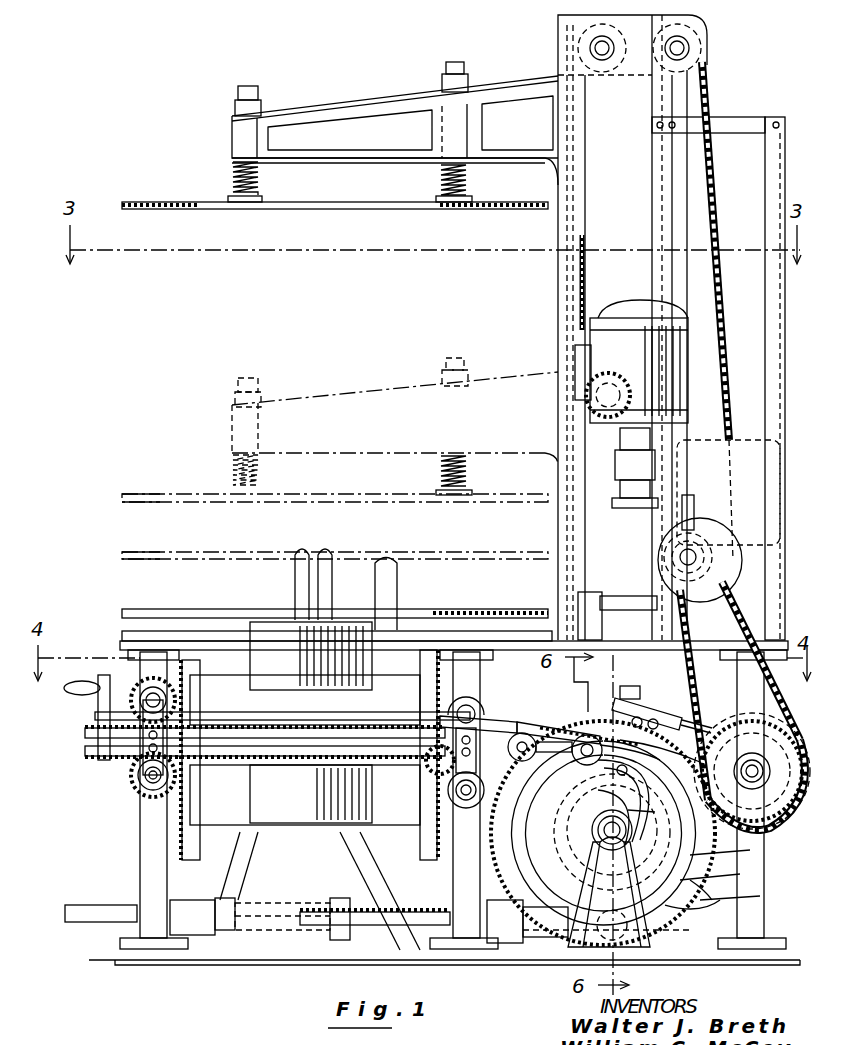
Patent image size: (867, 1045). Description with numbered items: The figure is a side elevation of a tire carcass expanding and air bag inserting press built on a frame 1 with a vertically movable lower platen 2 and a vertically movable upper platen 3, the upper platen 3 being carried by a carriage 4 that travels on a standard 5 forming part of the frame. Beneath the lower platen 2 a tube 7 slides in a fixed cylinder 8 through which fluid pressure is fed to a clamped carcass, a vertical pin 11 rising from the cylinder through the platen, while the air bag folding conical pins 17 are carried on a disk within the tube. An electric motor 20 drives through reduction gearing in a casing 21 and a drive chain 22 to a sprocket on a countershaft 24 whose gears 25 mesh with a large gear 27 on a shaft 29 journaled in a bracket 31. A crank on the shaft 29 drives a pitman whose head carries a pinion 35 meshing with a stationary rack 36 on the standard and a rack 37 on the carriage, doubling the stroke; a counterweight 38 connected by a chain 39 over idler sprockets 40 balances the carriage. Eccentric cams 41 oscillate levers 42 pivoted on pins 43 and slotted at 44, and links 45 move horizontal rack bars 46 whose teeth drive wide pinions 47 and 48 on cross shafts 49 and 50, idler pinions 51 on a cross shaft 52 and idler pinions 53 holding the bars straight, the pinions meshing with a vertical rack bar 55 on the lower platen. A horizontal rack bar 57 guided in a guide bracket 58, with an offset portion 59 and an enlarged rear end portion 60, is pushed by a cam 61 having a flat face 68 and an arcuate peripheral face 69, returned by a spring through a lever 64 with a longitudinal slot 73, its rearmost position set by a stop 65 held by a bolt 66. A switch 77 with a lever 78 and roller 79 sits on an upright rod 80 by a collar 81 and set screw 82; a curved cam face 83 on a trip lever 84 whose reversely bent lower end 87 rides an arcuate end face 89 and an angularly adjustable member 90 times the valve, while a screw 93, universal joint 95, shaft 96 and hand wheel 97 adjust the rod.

The frame 1 is at (140, 842).
The lower platen 2 is at (160, 552).
The upper platen 3 is at (346, 205).
The carriage 4 is at (492, 88).
The standard 5 is at (558, 28).
The tube 7 is at (258, 654).
The fixed cylinder 8 is at (275, 782).
The vertical pin 11 is at (394, 668).
The conical pins 17 is at (295, 605).
The electric motor 20 is at (598, 320).
The casing 21 is at (712, 512).
The drive chain 22 is at (724, 608).
The countershaft 24 is at (762, 785).
The gears 25 is at (790, 722).
The large gear 27 is at (712, 900).
The shaft 29 is at (640, 836).
The bracket 31 is at (648, 860).
The pinion 35 is at (595, 360).
The rack 36 is at (630, 560).
The rack 37 is at (590, 282).
The counterweight 38 is at (728, 492).
The chain 39 is at (716, 205).
The idler sprockets 40 is at (652, 66).
The eccentric cams 41 is at (560, 852).
The levers 42 is at (552, 826).
The pins 43 is at (630, 970).
The slot 44 is at (606, 922).
The links 45 is at (530, 735).
The horizontal rack bars 46 is at (298, 770).
The wide pinions 47 is at (128, 690).
The wide pinions 48 is at (436, 760).
The cross shaft 49 is at (160, 692).
The cross shaft 50 is at (456, 790).
The idler pinions 51 is at (132, 782).
The cross shaft 52 is at (153, 785).
The idler pinions 53 is at (482, 700).
The vertical rack bar 55 is at (200, 838).
The horizontal rack bar 57 is at (426, 912).
The guide bracket 58 is at (342, 900).
The offset portion 59 is at (505, 921).
The enlarged rear end portion 60 is at (692, 921).
The cam 61 is at (760, 854).
The lever 64 is at (185, 900).
The stop 65 is at (222, 950).
The bolt 66 is at (240, 898).
The flat face 68 is at (764, 902).
The arcuate peripheral face 69 is at (760, 880).
The longitudinal slot 73 is at (728, 730).
The switch 77 is at (706, 704).
The lever 78 is at (718, 690).
The roller 79 is at (650, 708).
The upright rod 80 is at (636, 695).
The collar 81 is at (652, 700).
The set screw 82 is at (626, 685).
The curved cam face 83 is at (650, 757).
The trip lever 84 is at (650, 780).
The reversely bent lower end 87 is at (663, 805).
The arcuate end face 89 is at (600, 795).
The angularly adjustable member 90 is at (640, 822).
The screw 93 is at (568, 726).
The universal joint 95 is at (514, 718).
The shaft 96 is at (303, 715).
The hand wheel 97 is at (96, 703).